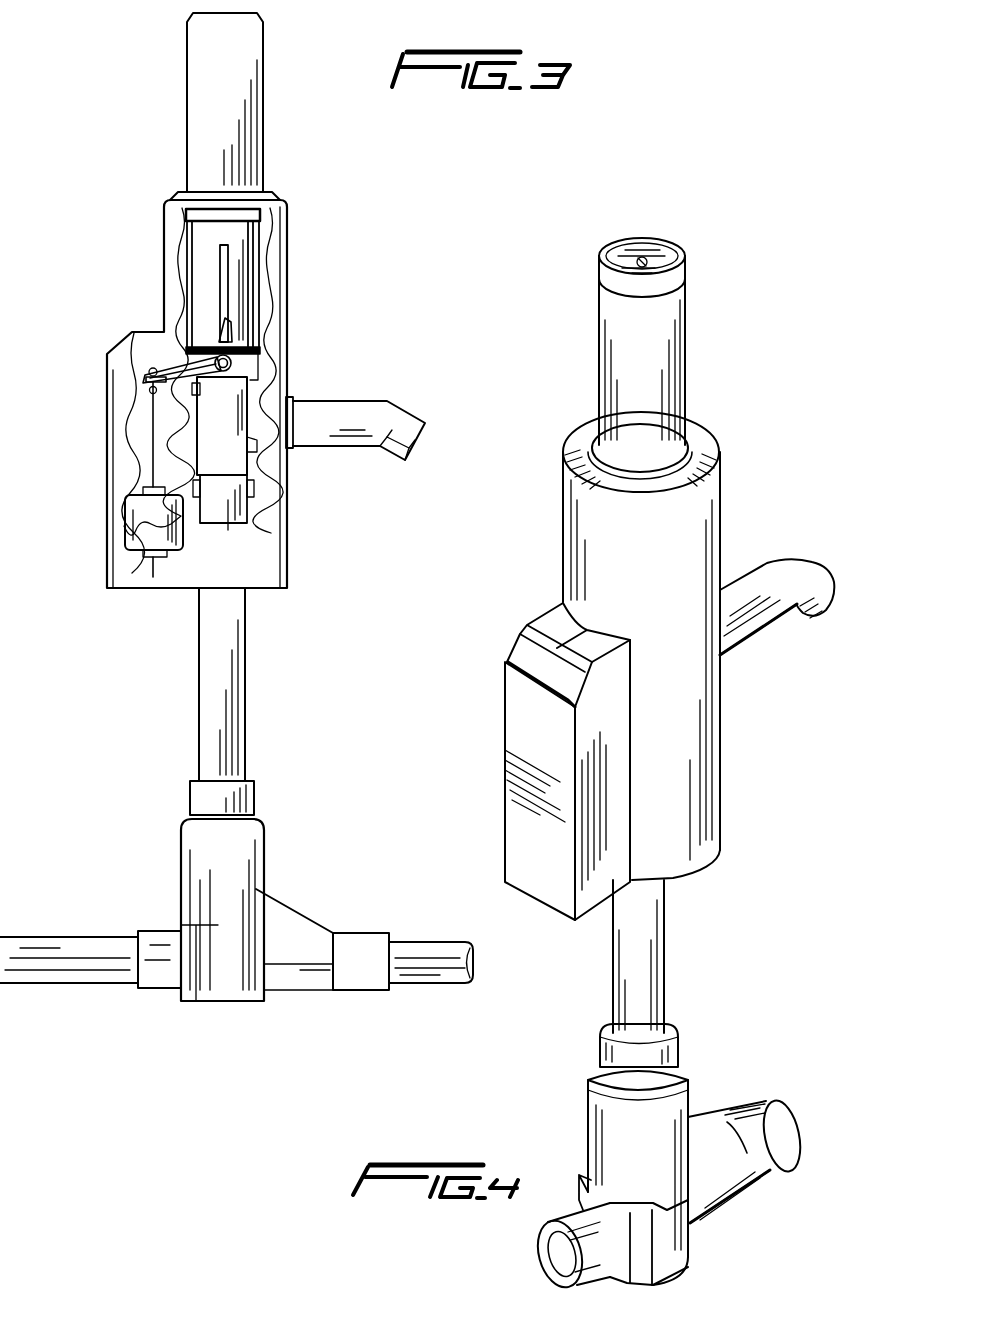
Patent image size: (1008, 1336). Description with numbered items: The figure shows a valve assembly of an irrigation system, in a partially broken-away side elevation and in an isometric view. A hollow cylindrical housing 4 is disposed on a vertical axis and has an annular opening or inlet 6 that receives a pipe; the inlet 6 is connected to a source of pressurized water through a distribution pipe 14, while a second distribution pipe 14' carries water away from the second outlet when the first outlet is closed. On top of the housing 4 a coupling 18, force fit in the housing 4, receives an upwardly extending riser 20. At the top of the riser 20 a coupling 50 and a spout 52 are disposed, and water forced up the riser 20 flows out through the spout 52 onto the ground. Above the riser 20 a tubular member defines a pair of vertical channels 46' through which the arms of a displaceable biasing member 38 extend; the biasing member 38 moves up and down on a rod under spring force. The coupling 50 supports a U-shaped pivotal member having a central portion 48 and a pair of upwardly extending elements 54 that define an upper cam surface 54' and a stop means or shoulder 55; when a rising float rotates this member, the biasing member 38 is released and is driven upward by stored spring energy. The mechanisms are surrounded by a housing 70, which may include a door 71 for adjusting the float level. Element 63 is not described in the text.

In FIG. 3, the cylinder 63 is at (187, 95).
In FIG. 4, the cylinder 63 is at (685, 337).
In FIG. 3, the housing 70 is at (258, 574).
In FIG. 4, the housing 70 is at (668, 532).
In FIG. 3, the vertical channels 46' is at (280, 278).
In FIG. 3, the upper cam surface 54' is at (169, 318).
In FIG. 3, the stop means or shoulder 55 is at (222, 350).
In FIG. 3, the central portion 48 is at (178, 368).
In FIG. 3, the displaceable biasing member 38 is at (226, 338).
In FIG. 3, the upwardly extending elements 54 is at (282, 368).
In FIG. 3, the spout 52 is at (380, 400).
In FIG. 4, the spout 52 is at (778, 563).
In FIG. 3, the coupling 50 is at (197, 425).
In FIG. 3, the door 71 is at (107, 473).
In FIG. 4, the door 71 is at (521, 713).
In FIG. 3, the riser 20 is at (245, 668).
In FIG. 4, the riser 20 is at (664, 950).
In FIG. 3, the coupling 18 is at (190, 805).
In FIG. 3, the hollow cylindrical housing 4 is at (332, 925).
In FIG. 4, the hollow cylindrical housing 4 is at (697, 1158).
In FIG. 3, the distribution pipe 14' is at (69, 927).
In FIG. 3, the distribution pipe 14 is at (431, 936).
In FIG. 4, the annular opening or inlet 6 is at (763, 1167).